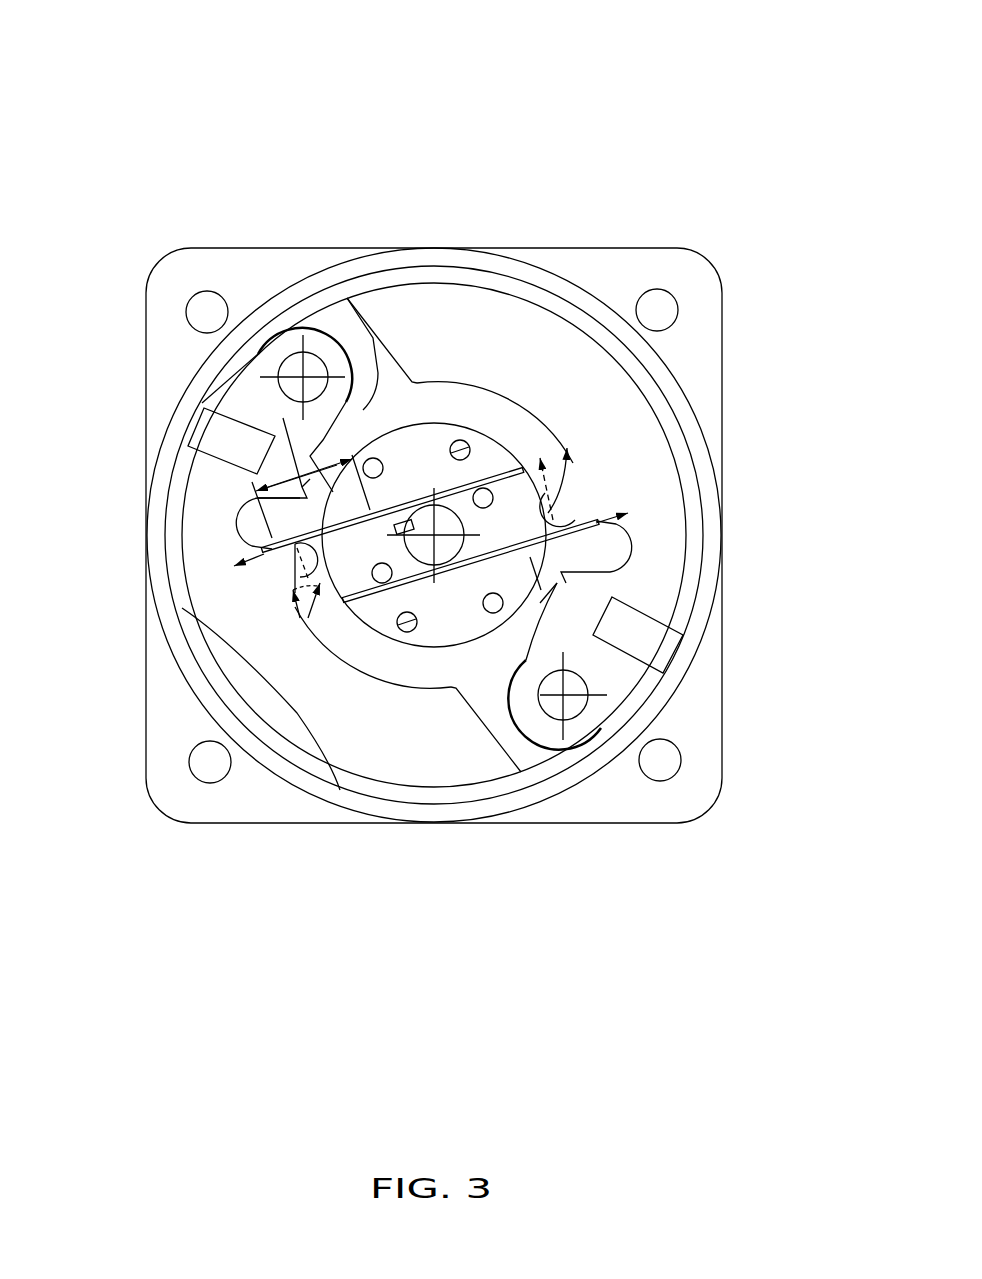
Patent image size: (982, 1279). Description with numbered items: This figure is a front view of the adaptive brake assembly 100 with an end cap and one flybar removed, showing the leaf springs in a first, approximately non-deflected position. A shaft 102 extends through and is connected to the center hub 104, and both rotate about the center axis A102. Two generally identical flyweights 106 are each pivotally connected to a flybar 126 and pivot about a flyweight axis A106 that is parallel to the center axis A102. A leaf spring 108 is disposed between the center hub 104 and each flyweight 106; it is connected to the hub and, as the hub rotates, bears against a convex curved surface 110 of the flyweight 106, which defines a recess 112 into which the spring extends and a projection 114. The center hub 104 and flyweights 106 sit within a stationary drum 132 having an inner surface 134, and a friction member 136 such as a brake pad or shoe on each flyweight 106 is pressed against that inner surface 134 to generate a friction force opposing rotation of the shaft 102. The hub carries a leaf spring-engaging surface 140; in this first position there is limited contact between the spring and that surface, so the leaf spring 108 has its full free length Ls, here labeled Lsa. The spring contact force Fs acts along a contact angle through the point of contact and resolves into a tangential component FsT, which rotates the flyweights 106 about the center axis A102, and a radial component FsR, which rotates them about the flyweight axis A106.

The adaptive brake assembly 100 is at (415, 112).
The shaft 102 is at (447, 523).
The center hub 104 is at (440, 440).
The flyweight 106 is at (478, 347).
The leaf spring 108 is at (337, 522).
The curved surface 110 is at (252, 538).
The recess 112 is at (240, 523).
The projection 114 is at (580, 507).
The flybar 126 is at (412, 462).
The drum 132 is at (160, 500).
The inner surface 134 is at (257, 743).
The friction member 136 is at (202, 426).
The leaf spring-engaging surface 140 is at (345, 522).
The center axis A102 is at (434, 537).
The flyweight axis A106 is at (302, 340).
The free length Ls is at (202, 403).
The active link length Lsa is at (219, 401).
The radial component FsR is at (255, 563).
The spring contact force Fs is at (265, 590).
The tangential component FsT is at (345, 612).